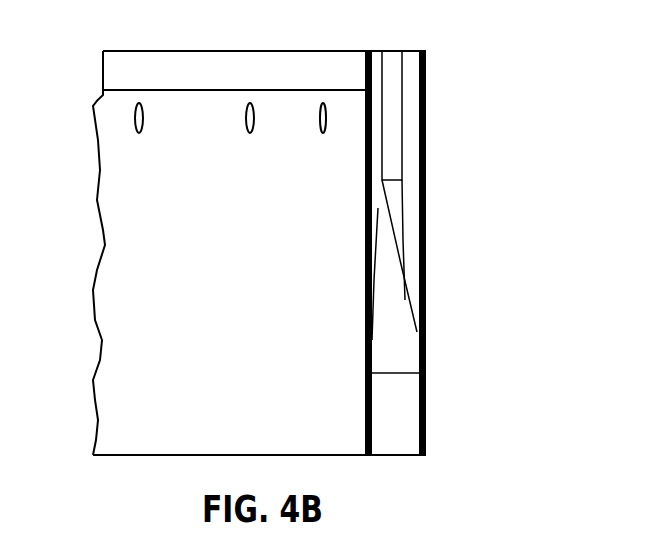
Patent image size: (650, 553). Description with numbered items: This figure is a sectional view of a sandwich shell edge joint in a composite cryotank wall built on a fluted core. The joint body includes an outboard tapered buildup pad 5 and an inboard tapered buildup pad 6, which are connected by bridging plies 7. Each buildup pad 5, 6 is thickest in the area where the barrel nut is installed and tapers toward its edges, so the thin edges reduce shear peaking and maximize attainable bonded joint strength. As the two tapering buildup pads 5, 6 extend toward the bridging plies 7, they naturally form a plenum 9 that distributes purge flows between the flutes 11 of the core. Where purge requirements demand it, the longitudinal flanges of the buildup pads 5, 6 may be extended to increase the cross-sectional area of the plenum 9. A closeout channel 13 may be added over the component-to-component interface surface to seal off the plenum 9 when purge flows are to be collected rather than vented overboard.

The outboard tapered buildup pad 5 is at (419, 237).
The inboard tapered buildup pad 6 is at (374, 211).
The bridging plies 7 is at (387, 177).
The plenum 9 is at (392, 272).
The flutes 11 is at (372, 388).
The closeout channel 13 is at (397, 60).